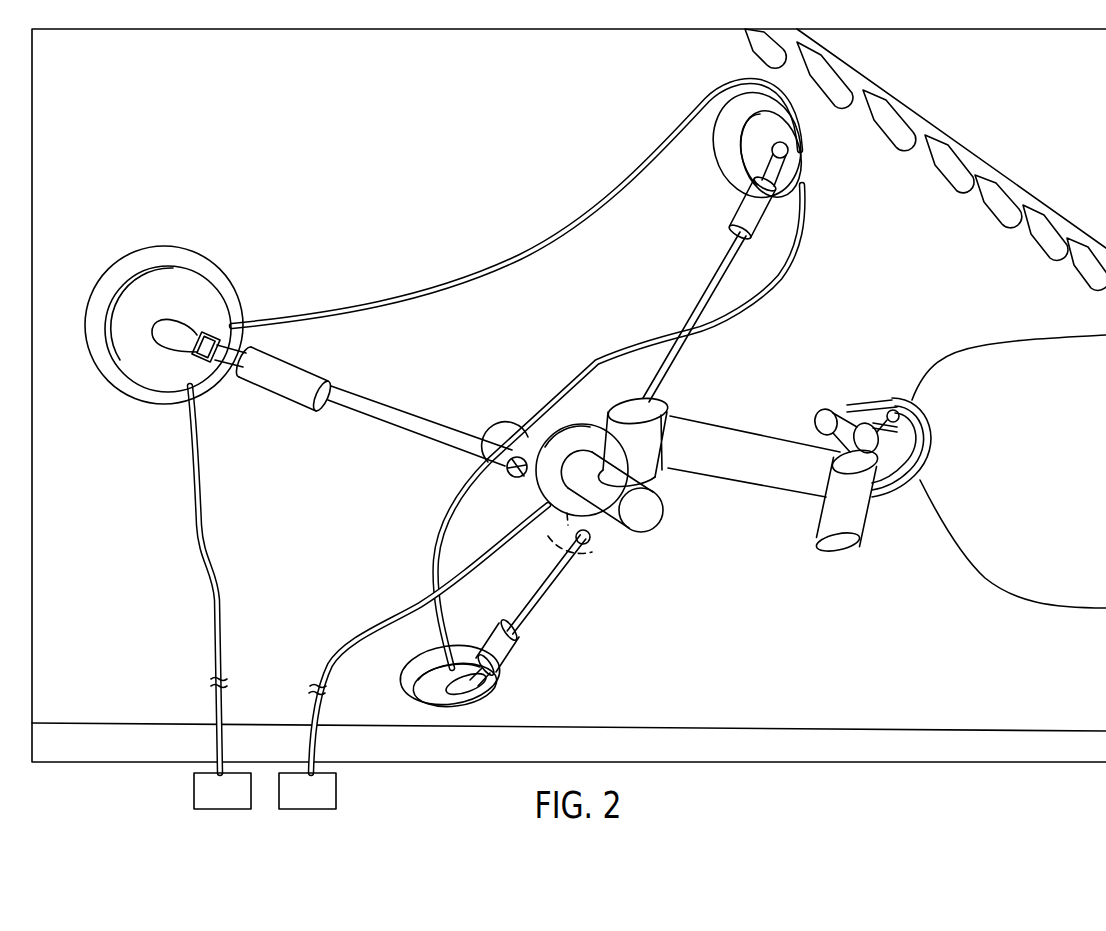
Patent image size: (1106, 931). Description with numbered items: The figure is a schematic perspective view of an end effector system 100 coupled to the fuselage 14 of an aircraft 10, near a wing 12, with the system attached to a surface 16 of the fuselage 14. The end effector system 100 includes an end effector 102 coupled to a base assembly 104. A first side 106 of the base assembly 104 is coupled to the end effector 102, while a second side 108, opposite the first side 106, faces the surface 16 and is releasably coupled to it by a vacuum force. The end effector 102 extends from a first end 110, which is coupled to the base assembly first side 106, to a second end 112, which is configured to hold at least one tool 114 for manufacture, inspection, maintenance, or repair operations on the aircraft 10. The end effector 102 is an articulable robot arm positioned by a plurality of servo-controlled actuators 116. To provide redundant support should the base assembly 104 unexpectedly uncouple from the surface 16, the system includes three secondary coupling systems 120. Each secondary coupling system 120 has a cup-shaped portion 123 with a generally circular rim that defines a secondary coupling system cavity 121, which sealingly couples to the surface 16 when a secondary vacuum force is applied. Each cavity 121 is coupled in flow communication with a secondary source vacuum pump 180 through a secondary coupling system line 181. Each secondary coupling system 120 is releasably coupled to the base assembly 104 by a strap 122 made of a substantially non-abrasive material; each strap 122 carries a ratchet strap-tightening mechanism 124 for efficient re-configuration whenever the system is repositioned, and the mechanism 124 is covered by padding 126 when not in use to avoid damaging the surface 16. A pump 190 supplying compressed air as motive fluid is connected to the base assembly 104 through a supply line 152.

The aircraft 10 is at (989, 112).
The wing 12 is at (1029, 479).
The fuselage 14 is at (416, 136).
The surface 16 is at (616, 275).
The end effector system 100 is at (256, 133).
The end effector 102 is at (742, 441).
The base assembly 104 is at (560, 430).
The first side 106 is at (540, 510).
The second side 108 is at (560, 546).
The first end 110 is at (676, 469).
The second end 112 is at (890, 455).
The tool 114 is at (907, 425).
The servo-controlled actuators 116 is at (640, 437).
The secondary coupling system 120 is at (175, 290).
The secondary coupling system cavity 121 is at (199, 306).
The strap 122 is at (371, 407).
The cup-shaped portion 123 is at (124, 268).
The ratchet strap-tightening mechanism 124 is at (283, 398).
The padding 126 is at (288, 372).
The supply line 152 is at (455, 585).
The secondary source vacuum pump 180 is at (206, 805).
The secondary coupling system line 181 is at (538, 245).
The pump 190 is at (291, 805).